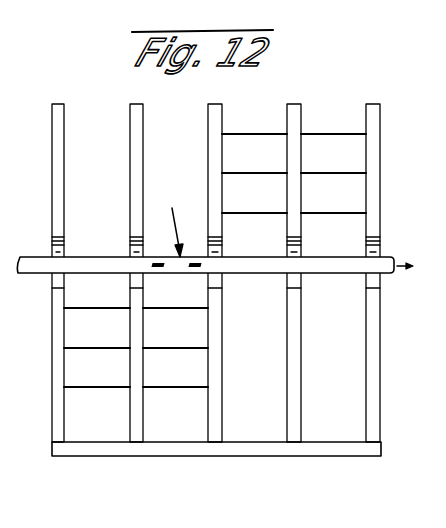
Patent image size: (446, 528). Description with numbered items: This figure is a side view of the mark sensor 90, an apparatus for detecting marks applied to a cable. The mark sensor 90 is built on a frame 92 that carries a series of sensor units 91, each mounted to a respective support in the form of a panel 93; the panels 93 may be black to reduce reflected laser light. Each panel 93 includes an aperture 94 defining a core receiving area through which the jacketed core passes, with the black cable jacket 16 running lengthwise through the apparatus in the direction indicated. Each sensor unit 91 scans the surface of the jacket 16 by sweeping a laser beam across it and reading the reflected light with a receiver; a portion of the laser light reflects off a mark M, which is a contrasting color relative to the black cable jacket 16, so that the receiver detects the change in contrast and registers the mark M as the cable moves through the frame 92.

The mark sensor 90 is at (303, 64).
The panel 93 is at (65, 134).
The frame 92 is at (0, 349).
The sensor unit 91 is at (255, 145).
The aperture 94 is at (53, 250).
The cable jacket 16 is at (392, 260).
The mark M is at (172, 222).